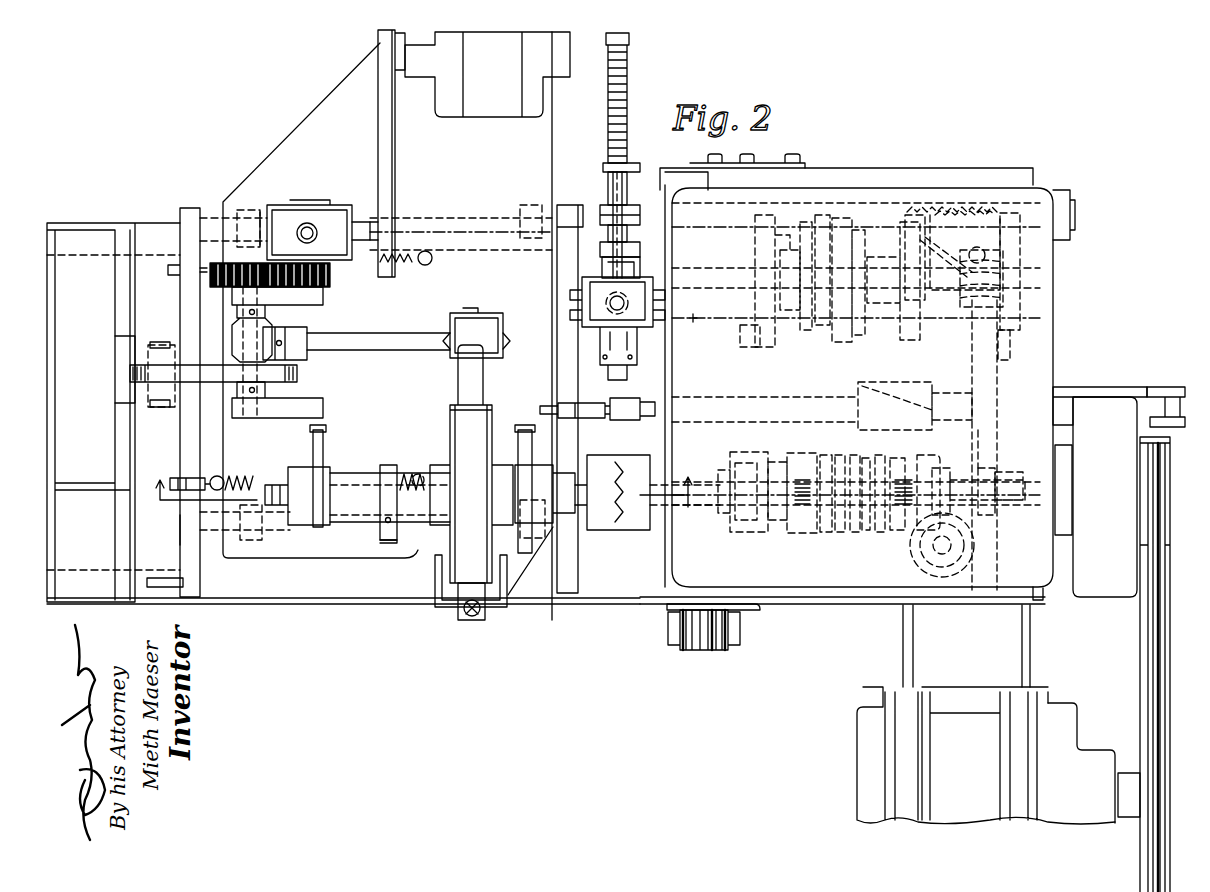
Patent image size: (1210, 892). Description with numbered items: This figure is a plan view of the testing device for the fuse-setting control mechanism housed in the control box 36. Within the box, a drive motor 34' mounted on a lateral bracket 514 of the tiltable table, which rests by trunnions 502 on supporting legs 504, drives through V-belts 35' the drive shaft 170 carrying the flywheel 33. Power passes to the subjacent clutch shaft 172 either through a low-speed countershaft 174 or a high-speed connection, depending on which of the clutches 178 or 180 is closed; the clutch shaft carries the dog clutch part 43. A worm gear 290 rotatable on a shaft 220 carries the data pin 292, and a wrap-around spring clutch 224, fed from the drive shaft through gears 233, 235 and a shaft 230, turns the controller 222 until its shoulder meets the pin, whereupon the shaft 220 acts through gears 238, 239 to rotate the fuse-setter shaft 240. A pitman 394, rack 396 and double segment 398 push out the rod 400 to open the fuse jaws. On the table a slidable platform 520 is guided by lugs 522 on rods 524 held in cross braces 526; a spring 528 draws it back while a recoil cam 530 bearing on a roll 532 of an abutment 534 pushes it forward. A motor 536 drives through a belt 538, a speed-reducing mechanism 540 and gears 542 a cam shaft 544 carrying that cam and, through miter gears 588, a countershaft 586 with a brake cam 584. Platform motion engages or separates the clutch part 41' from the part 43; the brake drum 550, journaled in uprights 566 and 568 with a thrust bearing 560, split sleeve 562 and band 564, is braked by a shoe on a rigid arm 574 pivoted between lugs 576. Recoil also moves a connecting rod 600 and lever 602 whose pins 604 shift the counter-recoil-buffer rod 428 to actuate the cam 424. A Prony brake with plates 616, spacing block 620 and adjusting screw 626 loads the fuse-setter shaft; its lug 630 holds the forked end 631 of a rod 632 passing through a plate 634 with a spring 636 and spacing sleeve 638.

The flywheel 33 is at (1105, 590).
The drive motor 34' is at (959, 755).
The V-belts 35' is at (1097, 731).
The control box 36 is at (1053, 322).
The clutch part 41' is at (604, 543).
The clutch part 43 is at (640, 477).
The drive shaft 170 is at (1033, 505).
The clutch shaft 172 is at (707, 507).
The countershaft 174 is at (950, 547).
The clutch 178 is at (907, 502).
The clutch 180 is at (807, 502).
The shaft 220 is at (1033, 265).
The fuse-clutch-release plate 222 is at (900, 323).
The wrap-around spring clutch 224 is at (955, 319).
The shaft 230 is at (993, 453).
The gear 233 is at (1007, 480).
The gear 235 is at (980, 510).
The gear 238 is at (752, 243).
The gear 239 is at (750, 327).
The fuse-setter shaft 240 is at (693, 322).
The worm gear 290 is at (840, 218).
The data pin 292 is at (823, 223).
The pitman 394 is at (1010, 347).
The rack 396 is at (1015, 308).
The double segment 398 is at (970, 213).
The rod 400 is at (631, 212).
The cam 424 is at (907, 393).
The counter-recoil-buffer rod 428 is at (770, 398).
The trunnions 502 is at (700, 645).
The supporting legs 504 is at (737, 630).
The lateral bracket 514 is at (907, 650).
The slidable platform 520 is at (323, 108).
The lugs 522 is at (522, 212).
The rods 524 is at (212, 527).
The cross braces 526 is at (190, 435).
The spring 528 is at (247, 478).
The recoil cam 530 is at (300, 370).
The roll 532 is at (165, 370).
The abutment 534 is at (122, 417).
The motor 536 is at (505, 112).
The belt 538 is at (387, 153).
The speed-reducing mechanism 540 is at (288, 212).
The gears 542 is at (270, 287).
The cam shaft 544 is at (250, 342).
The brake drum 550 is at (462, 422).
The thrust bearing 560 is at (348, 470).
The split sleeve 562 is at (360, 475).
The band 564 is at (388, 528).
The upright 566 is at (543, 472).
The upright 568 is at (307, 523).
The rigid arm 574 is at (466, 610).
The lugs 576 is at (450, 593).
The cam 584 is at (472, 313).
The countershaft 586 is at (410, 335).
The miter gears 588 is at (273, 323).
The connecting rod 600 is at (655, 403).
The lever 602 is at (1170, 450).
The pins 604 is at (1170, 397).
The plates 616 is at (640, 290).
The spacing block 620 is at (603, 291).
The screw 626 is at (503, 335).
The lug 630 is at (617, 273).
The forked end 631 is at (632, 257).
The rod 632 is at (608, 192).
The plate 634 is at (643, 165).
The spring 636 is at (640, 74).
The spacing sleeve 638 is at (628, 235).